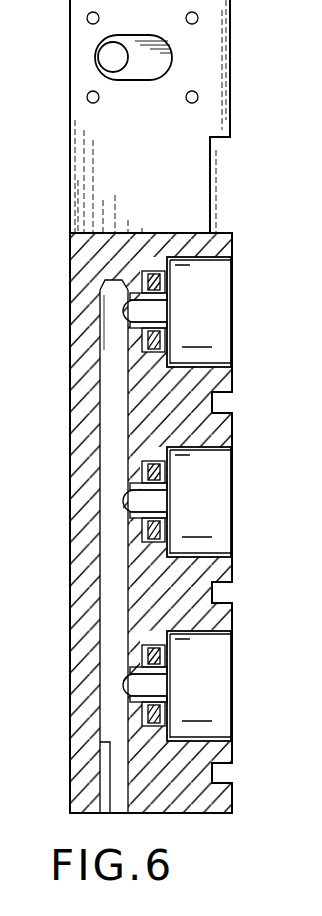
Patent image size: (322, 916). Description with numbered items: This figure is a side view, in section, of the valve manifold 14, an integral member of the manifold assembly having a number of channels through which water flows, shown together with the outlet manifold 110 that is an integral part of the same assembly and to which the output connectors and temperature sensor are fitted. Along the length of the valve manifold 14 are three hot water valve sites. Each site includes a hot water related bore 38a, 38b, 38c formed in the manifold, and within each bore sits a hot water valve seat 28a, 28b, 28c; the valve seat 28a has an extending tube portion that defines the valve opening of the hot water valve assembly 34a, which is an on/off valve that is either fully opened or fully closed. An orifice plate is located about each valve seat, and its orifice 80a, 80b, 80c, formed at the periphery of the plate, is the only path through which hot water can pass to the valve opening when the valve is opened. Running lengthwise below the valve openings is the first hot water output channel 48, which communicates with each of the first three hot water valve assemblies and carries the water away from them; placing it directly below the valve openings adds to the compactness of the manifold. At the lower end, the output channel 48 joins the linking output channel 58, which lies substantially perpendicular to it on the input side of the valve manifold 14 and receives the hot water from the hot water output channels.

The outlet manifold 110 is at (232, 32).
The valve manifold 14 is at (66, 541).
The first hot water output channel 48 is at (115, 432).
The linking output channel 58 is at (102, 780).
The hot water related bore 38c is at (214, 258).
The orifice 80c is at (163, 282).
The hot water valve seat 28c is at (163, 330).
The hot water related bore 38b is at (213, 450).
The orifice 80b is at (160, 528).
The hot water valve seat 28b is at (170, 540).
The hot water related bore 38a is at (213, 632).
The orifice 80a is at (160, 710).
The hot water valve seat 28a is at (172, 724).
The hot water valve assembly 34a is at (264, 807).